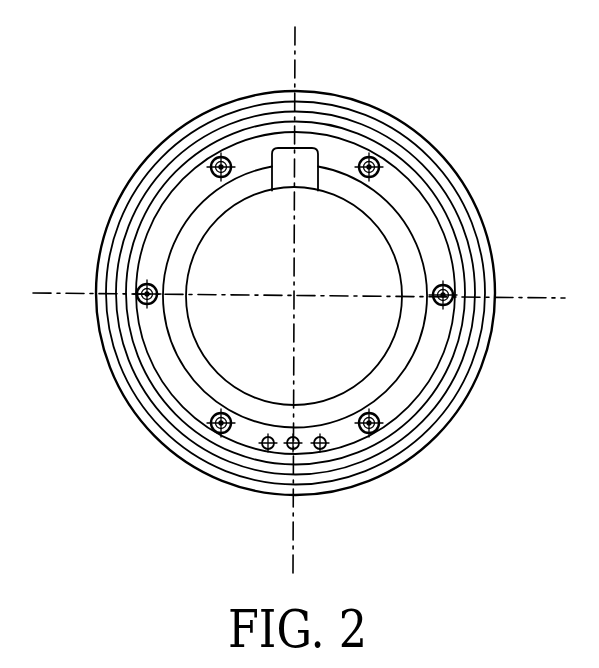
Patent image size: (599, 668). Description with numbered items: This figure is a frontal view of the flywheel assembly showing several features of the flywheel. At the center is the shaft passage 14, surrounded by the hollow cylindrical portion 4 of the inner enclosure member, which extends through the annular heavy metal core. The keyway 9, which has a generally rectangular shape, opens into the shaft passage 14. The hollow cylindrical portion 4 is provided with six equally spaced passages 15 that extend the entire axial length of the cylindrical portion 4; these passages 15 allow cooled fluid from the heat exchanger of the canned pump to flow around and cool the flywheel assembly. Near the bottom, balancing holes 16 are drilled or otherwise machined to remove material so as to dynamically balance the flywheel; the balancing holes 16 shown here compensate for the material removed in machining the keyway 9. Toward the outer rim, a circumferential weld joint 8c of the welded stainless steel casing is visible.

The hollow cylindrical portion 4 is at (430, 242).
The circumferential weld joint 8c is at (465, 360).
The keyway 9 is at (306, 156).
The shaft passage 14 is at (349, 273).
The passages 15 is at (214, 162).
The balancing holes 16 is at (272, 446).